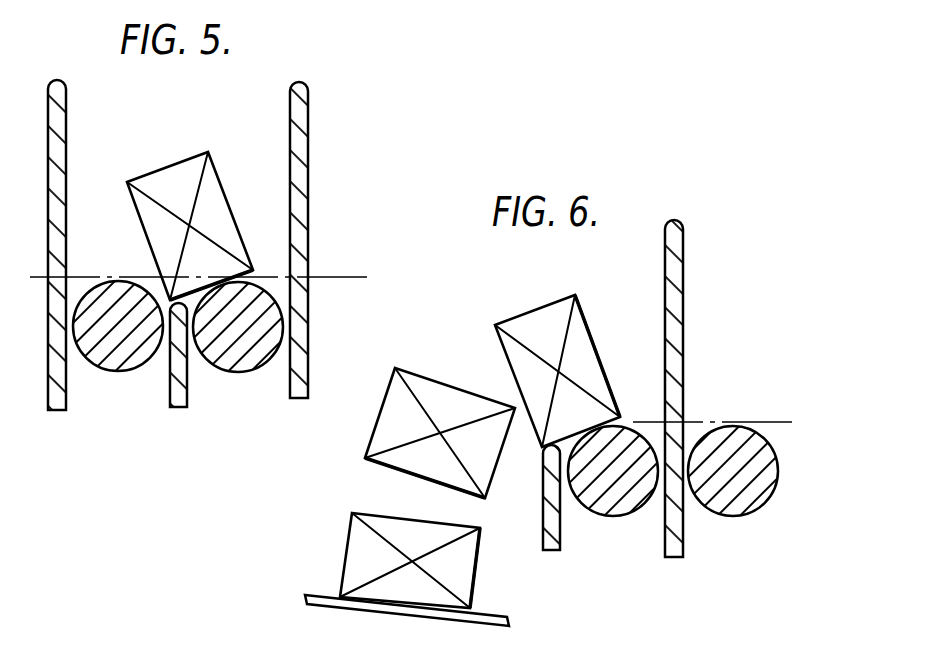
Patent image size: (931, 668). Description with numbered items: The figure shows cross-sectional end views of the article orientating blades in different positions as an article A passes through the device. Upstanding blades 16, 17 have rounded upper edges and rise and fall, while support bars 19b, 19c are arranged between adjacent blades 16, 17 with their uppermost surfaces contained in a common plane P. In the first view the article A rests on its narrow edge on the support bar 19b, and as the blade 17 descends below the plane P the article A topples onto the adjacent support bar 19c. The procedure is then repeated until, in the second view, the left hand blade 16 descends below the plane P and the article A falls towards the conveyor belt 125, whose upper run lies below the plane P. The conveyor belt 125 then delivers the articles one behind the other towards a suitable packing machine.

In FIG. 5, the blade 16 is at (55, 412).
In FIG. 6, the blade 16 is at (549, 551).
In FIG. 5, the blade 17 is at (178, 408).
In FIG. 6, the blade 17 is at (671, 558).
In FIG. 5, the support bar 19b is at (232, 367).
In FIG. 6, the support bar 19b is at (736, 513).
In FIG. 5, the support bar 19c is at (112, 366).
In FIG. 6, the support bar 19c is at (608, 514).
In FIG. 5, the article A is at (164, 168).
In FIG. 6, the article A is at (535, 312).
In FIG. 5, the plane P is at (328, 277).
In FIG. 6, the plane P is at (763, 422).
In FIG. 6, the conveyor belt 125 is at (310, 596).